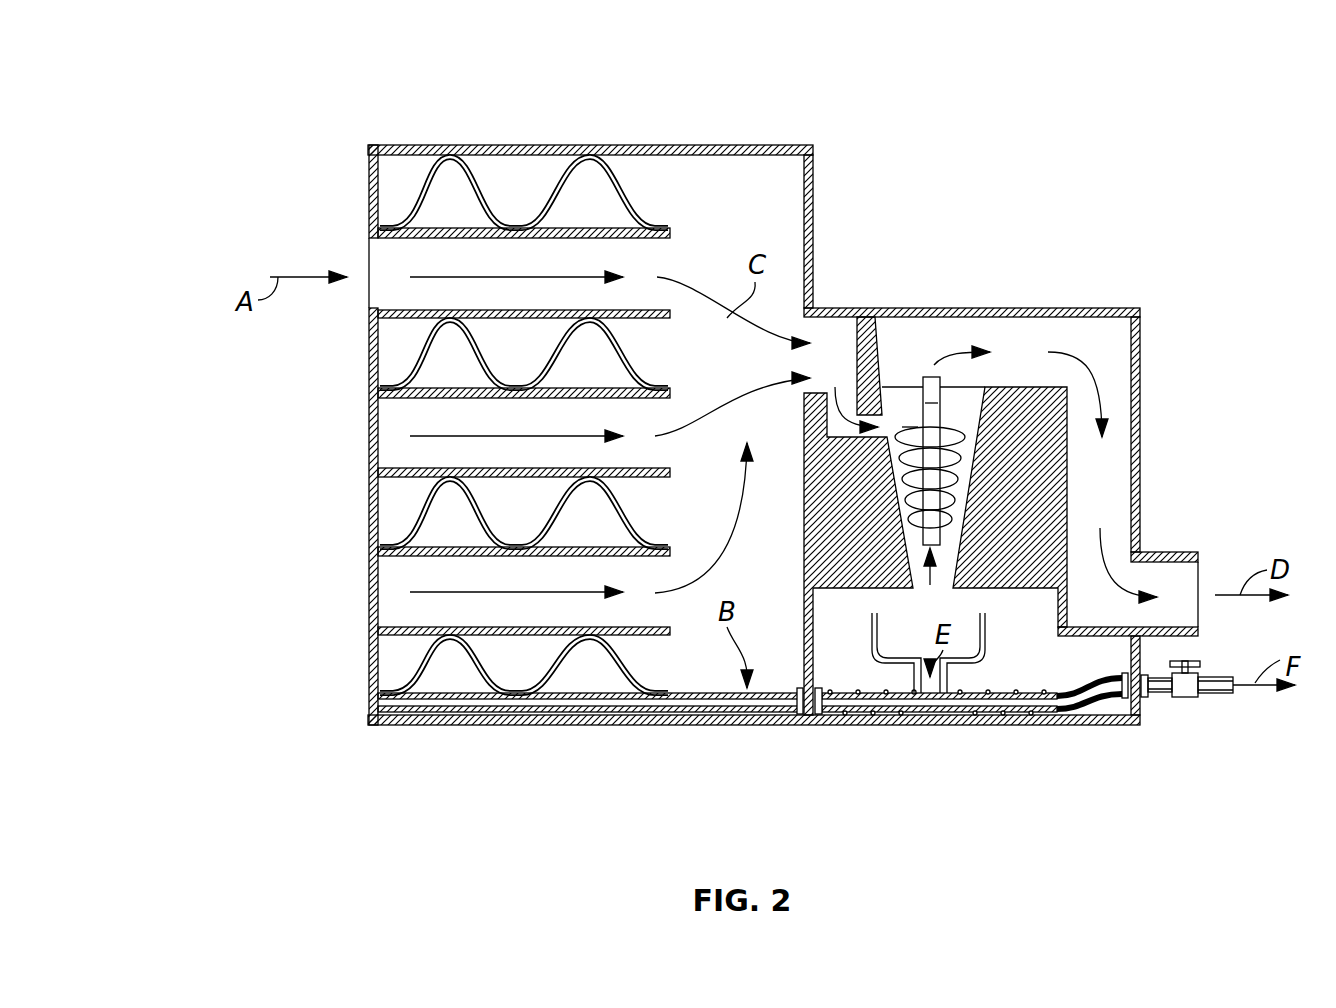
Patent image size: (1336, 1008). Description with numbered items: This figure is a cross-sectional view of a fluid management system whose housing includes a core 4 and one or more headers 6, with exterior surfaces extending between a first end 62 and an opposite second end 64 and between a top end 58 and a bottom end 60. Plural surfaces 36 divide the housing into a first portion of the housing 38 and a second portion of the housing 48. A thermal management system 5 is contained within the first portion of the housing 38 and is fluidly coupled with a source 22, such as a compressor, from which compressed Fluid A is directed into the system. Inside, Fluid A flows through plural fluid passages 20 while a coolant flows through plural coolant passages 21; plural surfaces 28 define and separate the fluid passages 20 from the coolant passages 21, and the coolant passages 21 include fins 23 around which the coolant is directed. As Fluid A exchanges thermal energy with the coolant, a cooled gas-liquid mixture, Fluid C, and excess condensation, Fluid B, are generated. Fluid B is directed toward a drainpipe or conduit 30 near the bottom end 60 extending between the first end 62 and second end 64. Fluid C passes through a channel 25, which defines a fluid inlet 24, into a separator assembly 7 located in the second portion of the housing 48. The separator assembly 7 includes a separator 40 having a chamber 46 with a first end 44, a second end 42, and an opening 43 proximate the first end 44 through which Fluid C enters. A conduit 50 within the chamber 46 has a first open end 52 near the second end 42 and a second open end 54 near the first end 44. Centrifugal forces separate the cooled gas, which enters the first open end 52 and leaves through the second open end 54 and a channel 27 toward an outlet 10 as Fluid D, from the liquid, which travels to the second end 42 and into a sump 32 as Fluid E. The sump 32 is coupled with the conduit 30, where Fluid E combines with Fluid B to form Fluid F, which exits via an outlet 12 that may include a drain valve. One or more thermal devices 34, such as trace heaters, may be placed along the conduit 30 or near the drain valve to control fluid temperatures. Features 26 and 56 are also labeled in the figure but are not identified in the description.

The core 4 is at (408, 145).
The thermal management system 5 is at (670, 60).
The headers 6 is at (983, 383).
The separator assembly 7 is at (1042, 235).
The outlet 10 is at (1185, 552).
The outlet 12 is at (1185, 698).
The fluid passages 20 is at (378, 257).
The coolant passages 21 is at (520, 185).
The source 22 is at (750, 195).
The fins 23 is at (620, 163).
The fluid inlet 24 is at (795, 360).
The channel 25 is at (833, 357).
The passage 26 is at (857, 377).
The channel 27 is at (1097, 337).
The surfaces 28 is at (1140, 352).
The drainpipe or conduit 30 is at (455, 703).
The sump 32 is at (982, 663).
The thermal devices 34 is at (1112, 697).
The surfaces 36 is at (793, 217).
The first portion of the housing 38 is at (585, 70).
The separator 40 is at (960, 537).
The second end 42 is at (930, 573).
The opening 43 is at (902, 423).
The first end 44 is at (988, 383).
The chamber 46 is at (963, 487).
The second portion of the housing 48 is at (1022, 165).
The conduit 50 is at (1012, 383).
The first open end 52 is at (923, 573).
The second open end 54 is at (930, 375).
The electrode tip 56 is at (938, 403).
The top end 58 is at (802, 107).
The bottom end 60 is at (627, 740).
The first end 62 is at (275, 390).
The second end 64 is at (1245, 407).